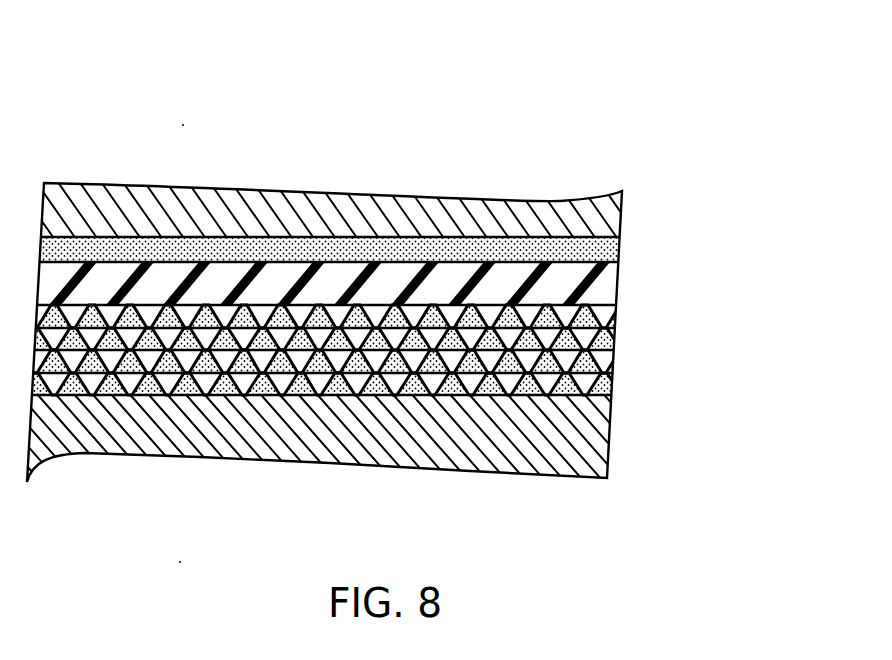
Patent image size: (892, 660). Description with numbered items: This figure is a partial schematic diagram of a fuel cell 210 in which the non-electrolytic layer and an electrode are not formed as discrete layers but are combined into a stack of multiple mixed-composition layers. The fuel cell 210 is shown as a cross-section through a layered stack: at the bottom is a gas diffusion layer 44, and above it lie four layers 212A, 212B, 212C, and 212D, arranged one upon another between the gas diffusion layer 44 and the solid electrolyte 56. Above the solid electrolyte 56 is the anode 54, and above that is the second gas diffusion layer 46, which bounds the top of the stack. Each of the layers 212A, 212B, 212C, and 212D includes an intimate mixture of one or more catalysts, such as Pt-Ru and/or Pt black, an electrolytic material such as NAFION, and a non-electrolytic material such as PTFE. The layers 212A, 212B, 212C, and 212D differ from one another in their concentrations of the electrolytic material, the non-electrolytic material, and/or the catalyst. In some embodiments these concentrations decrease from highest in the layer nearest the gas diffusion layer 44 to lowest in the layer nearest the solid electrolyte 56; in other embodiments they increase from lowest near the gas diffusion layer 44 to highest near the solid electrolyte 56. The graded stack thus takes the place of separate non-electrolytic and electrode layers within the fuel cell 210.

The fuel cell 210 is at (665, 131).
The gas diffusion layer 46 is at (600, 217).
The anode 54 is at (603, 251).
The solid electrolyte 56 is at (598, 287).
The layer 212D is at (606, 318).
The layer 212C is at (610, 343).
The layer 212B is at (607, 364).
The layer 212A is at (605, 386).
The gas diffusion layer 44 is at (590, 436).